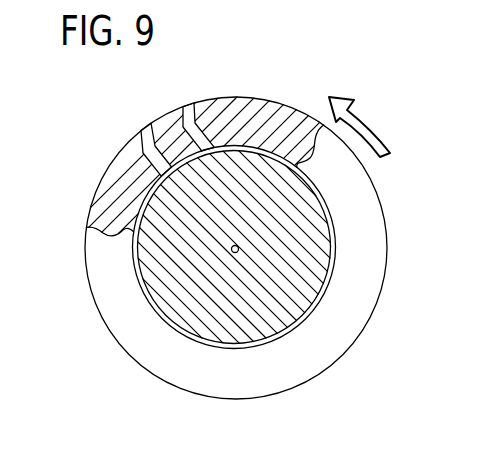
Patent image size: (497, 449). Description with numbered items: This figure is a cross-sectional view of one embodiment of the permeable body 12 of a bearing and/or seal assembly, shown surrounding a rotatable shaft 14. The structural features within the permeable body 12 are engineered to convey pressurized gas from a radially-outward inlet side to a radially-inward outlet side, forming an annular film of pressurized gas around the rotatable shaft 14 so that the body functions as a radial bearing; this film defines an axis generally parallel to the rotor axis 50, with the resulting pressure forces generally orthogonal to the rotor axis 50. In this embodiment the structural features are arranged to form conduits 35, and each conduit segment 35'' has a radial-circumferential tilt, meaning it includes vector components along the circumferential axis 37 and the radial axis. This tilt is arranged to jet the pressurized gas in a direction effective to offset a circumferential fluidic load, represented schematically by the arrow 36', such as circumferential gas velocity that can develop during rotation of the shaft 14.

The permeable body 12 is at (278, 113).
The rotatable shaft 14 is at (173, 288).
The conduits 35 is at (170, 180).
The conduit segment 35'' is at (137, 113).
The arrow 36' is at (384, 127).
The circumferential axis 37 is at (344, 353).
The rotor axis 50 is at (238, 254).